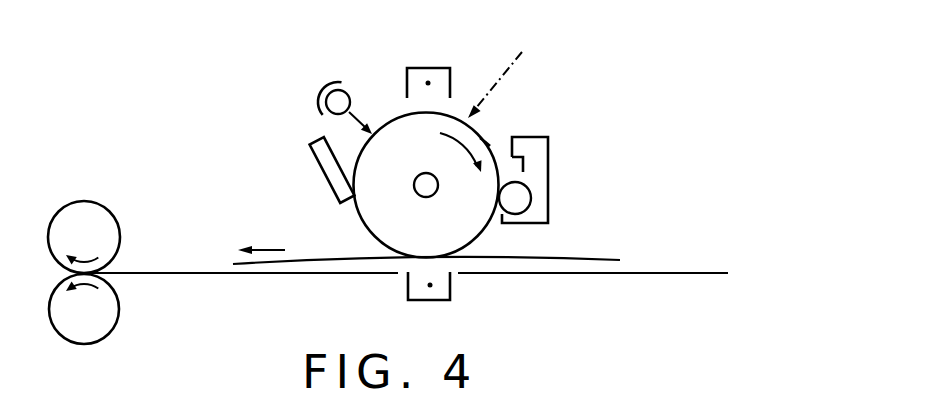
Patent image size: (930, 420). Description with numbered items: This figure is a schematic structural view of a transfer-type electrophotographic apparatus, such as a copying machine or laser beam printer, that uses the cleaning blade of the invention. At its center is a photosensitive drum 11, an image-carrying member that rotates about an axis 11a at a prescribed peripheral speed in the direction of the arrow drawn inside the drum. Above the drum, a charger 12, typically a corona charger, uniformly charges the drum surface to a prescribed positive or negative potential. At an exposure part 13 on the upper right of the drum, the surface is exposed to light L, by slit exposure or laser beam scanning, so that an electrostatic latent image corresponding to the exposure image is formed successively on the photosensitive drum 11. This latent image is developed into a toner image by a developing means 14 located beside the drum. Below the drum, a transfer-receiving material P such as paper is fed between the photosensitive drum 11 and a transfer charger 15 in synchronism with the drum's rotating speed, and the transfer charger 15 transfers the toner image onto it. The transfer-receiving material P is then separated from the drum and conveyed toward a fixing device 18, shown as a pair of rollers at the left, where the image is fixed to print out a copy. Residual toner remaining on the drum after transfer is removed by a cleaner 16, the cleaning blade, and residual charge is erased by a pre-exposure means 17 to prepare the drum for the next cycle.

The photosensitive drum 11 is at (362, 148).
The axis 11a is at (423, 173).
The charger 12 is at (428, 68).
The exposure part 13 is at (489, 137).
The developing means 14 is at (550, 168).
The transfer charger 15 is at (407, 287).
The cleaner 16 is at (323, 178).
The pre-exposure means 17 is at (322, 93).
The fixing device 18 is at (84, 201).
The light L is at (512, 63).
The transfer-receiving material P is at (573, 258).